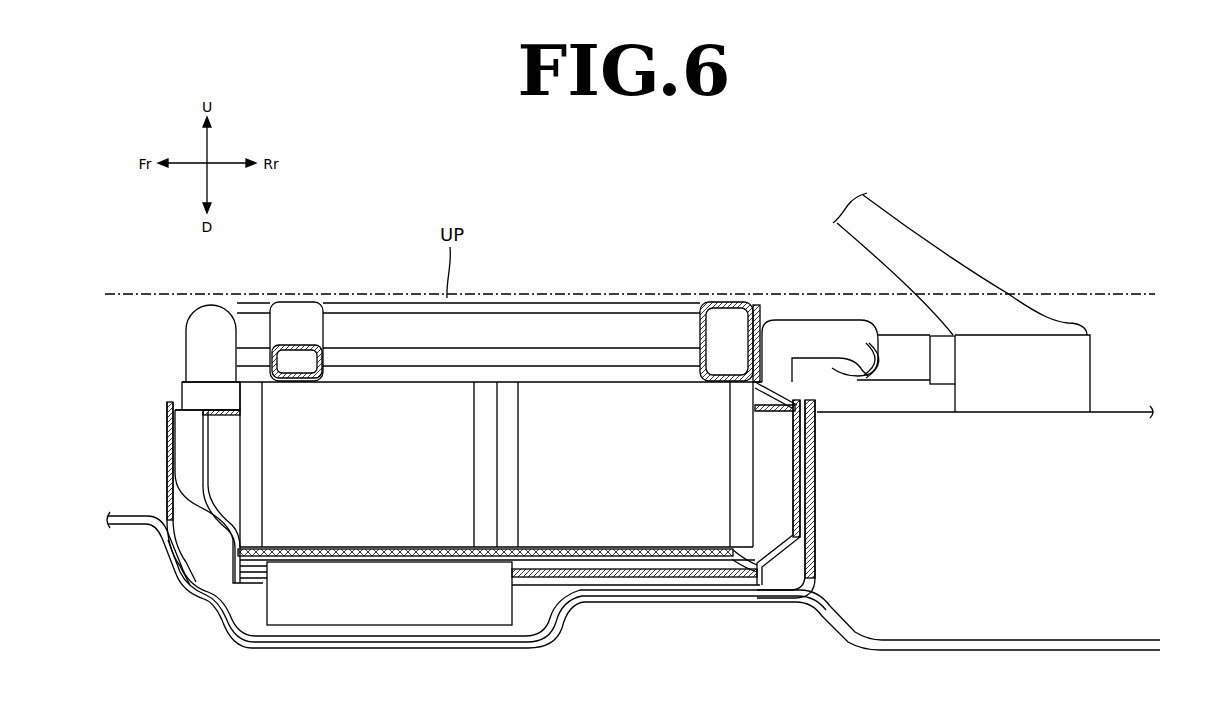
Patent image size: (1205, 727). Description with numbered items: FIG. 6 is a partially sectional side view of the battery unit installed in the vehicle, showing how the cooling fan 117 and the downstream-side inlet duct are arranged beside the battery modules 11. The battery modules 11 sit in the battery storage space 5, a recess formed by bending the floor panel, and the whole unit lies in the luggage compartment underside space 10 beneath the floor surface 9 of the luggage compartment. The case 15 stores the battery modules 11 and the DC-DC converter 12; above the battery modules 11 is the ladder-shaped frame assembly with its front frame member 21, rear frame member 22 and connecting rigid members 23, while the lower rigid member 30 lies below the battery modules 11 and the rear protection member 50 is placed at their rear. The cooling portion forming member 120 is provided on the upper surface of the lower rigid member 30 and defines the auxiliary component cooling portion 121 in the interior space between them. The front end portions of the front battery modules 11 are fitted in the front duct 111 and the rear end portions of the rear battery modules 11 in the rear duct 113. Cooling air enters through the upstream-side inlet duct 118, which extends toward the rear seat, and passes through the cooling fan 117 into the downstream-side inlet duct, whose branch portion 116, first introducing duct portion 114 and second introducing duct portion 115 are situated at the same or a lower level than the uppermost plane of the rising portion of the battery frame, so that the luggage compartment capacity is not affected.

The battery storage space 5 is at (843, 555).
The floor surface of the luggage compartment 9 is at (1132, 292).
The luggage compartment underside space 10 is at (1115, 333).
The battery module 11 is at (400, 410).
The DC-DC converter 12 is at (395, 600).
The case 15 is at (167, 466).
The front frame member 21 is at (293, 320).
The rear frame member 22 is at (725, 332).
The connecting rigid member 23 is at (520, 330).
The lower rigid member 30 is at (210, 603).
The rear protection member 50 is at (815, 513).
The front duct 111 is at (190, 395).
The rear duct 113 is at (815, 483).
The first introducing duct portion 114 is at (828, 338).
The second introducing duct portion 115 is at (243, 322).
The branch portion 116 is at (907, 368).
The cooling fan 117 is at (1025, 393).
The upstream-side inlet duct 118 is at (928, 268).
The cooling portion forming member 120 is at (285, 553).
The auxiliary component cooling portion 121 is at (645, 563).